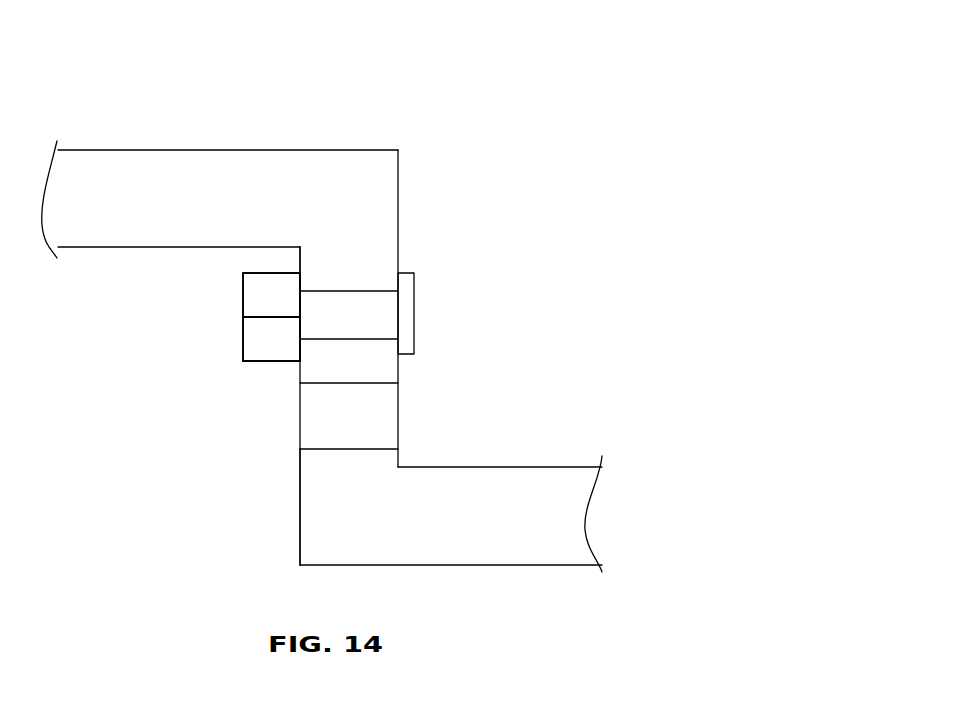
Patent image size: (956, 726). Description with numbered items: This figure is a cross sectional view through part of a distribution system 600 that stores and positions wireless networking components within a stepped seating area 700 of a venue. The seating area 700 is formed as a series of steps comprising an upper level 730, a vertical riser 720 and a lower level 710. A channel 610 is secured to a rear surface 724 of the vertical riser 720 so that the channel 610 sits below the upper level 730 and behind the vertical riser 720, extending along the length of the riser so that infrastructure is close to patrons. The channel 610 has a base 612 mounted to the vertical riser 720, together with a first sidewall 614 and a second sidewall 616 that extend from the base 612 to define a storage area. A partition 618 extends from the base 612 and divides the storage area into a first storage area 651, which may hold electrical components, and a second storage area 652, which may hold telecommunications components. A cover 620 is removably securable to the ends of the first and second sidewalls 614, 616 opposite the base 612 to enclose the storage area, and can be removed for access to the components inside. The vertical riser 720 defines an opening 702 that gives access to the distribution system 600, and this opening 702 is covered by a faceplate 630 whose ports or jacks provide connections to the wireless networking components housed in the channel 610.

The distribution system 600 is at (165, 460).
The channel 610 is at (162, 320).
The base 612 is at (300, 288).
The first sidewall 614 is at (260, 362).
The second sidewall 616 is at (243, 273).
The partition 618 is at (262, 317).
The cover 620 is at (243, 343).
The faceplate 630 is at (415, 302).
The first storage area 651 is at (247, 301).
The second storage area 652 is at (285, 357).
The seating area 700 is at (410, 90).
The opening 702 is at (367, 290).
The lower level 710 is at (538, 485).
The vertical riser 720 is at (375, 376).
The rear surface 724 is at (300, 512).
The upper level 730 is at (137, 172).